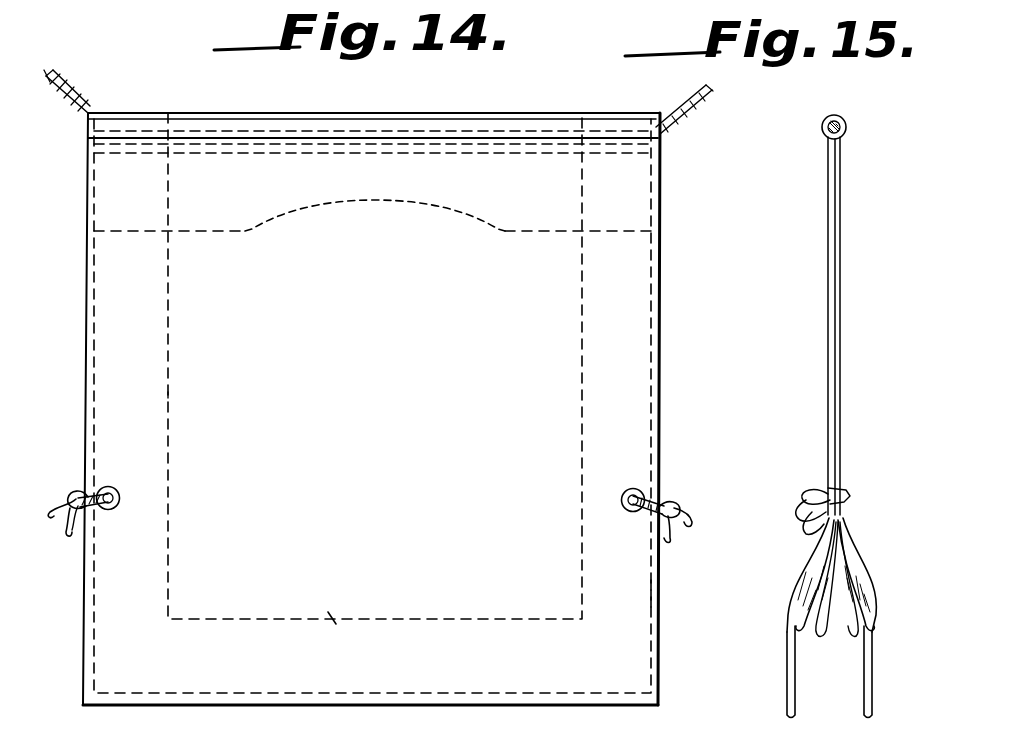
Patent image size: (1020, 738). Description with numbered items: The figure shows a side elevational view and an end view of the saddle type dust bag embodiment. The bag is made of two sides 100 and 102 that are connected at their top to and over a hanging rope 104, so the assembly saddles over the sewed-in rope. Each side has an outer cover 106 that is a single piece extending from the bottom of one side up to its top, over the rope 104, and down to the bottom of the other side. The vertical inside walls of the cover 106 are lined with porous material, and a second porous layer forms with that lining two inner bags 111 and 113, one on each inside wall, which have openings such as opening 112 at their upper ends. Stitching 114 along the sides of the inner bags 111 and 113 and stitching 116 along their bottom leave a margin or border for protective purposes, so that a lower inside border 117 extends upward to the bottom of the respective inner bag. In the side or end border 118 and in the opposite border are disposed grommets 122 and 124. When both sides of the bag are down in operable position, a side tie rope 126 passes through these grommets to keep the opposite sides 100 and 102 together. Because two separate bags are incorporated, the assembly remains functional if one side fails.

In FIG. 14, the side 100 is at (415, 390).
In FIG. 15, the side 100 is at (825, 378).
In FIG. 14, the side 102 is at (738, 722).
In FIG. 15, the side 102 is at (842, 333).
In FIG. 14, the hanging rope 104 is at (62, 93).
In FIG. 15, the hanging rope 104 is at (846, 127).
In FIG. 14, the outer cover 106 is at (640, 598).
In FIG. 15, the inner bag 111 is at (808, 628).
In FIG. 14, the opening 112 is at (527, 726).
In FIG. 15, the inner bag 113 is at (850, 640).
In FIG. 14, the stitching 114 is at (170, 398).
In FIG. 14, the stitching 116 is at (344, 604).
In FIG. 15, the lower inside border 117 is at (862, 690).
In FIG. 14, the side border 118 is at (736, 718).
In FIG. 14, the grommet 122 is at (644, 492).
In FIG. 14, the grommet 124 is at (120, 492).
In FIG. 14, the side tie rope 126 is at (90, 515).
In FIG. 15, the side tie rope 126 is at (848, 494).